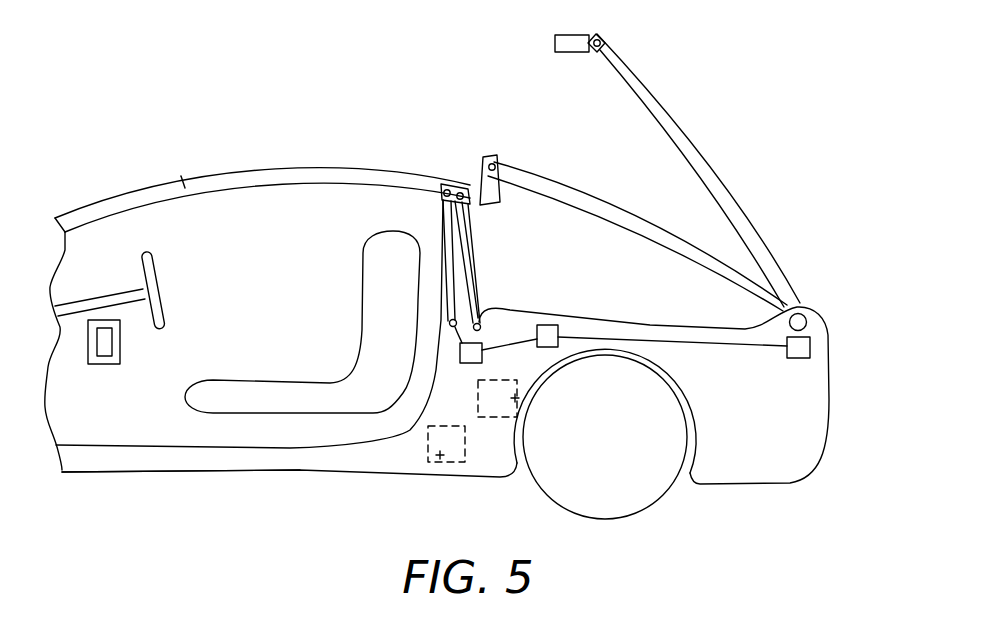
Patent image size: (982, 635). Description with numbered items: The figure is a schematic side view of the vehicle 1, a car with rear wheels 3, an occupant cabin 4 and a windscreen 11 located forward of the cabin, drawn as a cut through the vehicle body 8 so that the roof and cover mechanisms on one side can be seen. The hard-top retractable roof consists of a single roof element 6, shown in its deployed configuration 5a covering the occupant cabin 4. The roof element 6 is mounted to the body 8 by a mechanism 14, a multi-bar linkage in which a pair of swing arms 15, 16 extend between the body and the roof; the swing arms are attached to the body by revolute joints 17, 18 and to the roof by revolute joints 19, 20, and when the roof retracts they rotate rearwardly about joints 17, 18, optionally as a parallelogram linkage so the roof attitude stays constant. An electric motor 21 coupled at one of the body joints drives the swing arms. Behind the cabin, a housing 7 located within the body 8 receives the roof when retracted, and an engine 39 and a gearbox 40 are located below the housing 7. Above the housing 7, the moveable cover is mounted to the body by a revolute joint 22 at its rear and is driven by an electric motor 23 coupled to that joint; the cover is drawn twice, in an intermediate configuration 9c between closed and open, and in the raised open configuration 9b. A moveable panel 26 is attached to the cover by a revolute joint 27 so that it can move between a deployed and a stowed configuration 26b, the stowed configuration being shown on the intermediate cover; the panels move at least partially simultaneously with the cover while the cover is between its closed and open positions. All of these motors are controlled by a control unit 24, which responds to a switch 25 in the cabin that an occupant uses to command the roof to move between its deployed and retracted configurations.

The vehicle 1 is at (164, 130).
The rear wheels 3 is at (605, 519).
The occupant cabin 4 is at (222, 248).
The deployed configuration 5a is at (365, 160).
The roof element 6 is at (268, 177).
The housing 7 is at (707, 338).
The vehicle body 8 is at (371, 472).
The open configuration 9b is at (700, 157).
The intermediate configuration 9c is at (608, 213).
The windscreen 11 is at (120, 195).
The mechanism 14 is at (430, 222).
The swing arm 15 is at (445, 267).
The swing arm 16 is at (478, 275).
The revolute joint 17 is at (449, 323).
The revolute joint 18 is at (481, 325).
The revolute joint 19 is at (442, 185).
The revolute joint 20 is at (461, 189).
The electric motor 21 is at (460, 352).
The revolute joint 22 is at (801, 317).
The electric motor 23 is at (811, 347).
The control unit 24 is at (548, 325).
The switch 25 is at (102, 365).
The moveable panel 26 is at (567, 53).
The stowed configuration 26b is at (494, 201).
The revolute joint 27 is at (493, 164).
The engine 39 is at (446, 463).
The gearbox 40 is at (518, 400).